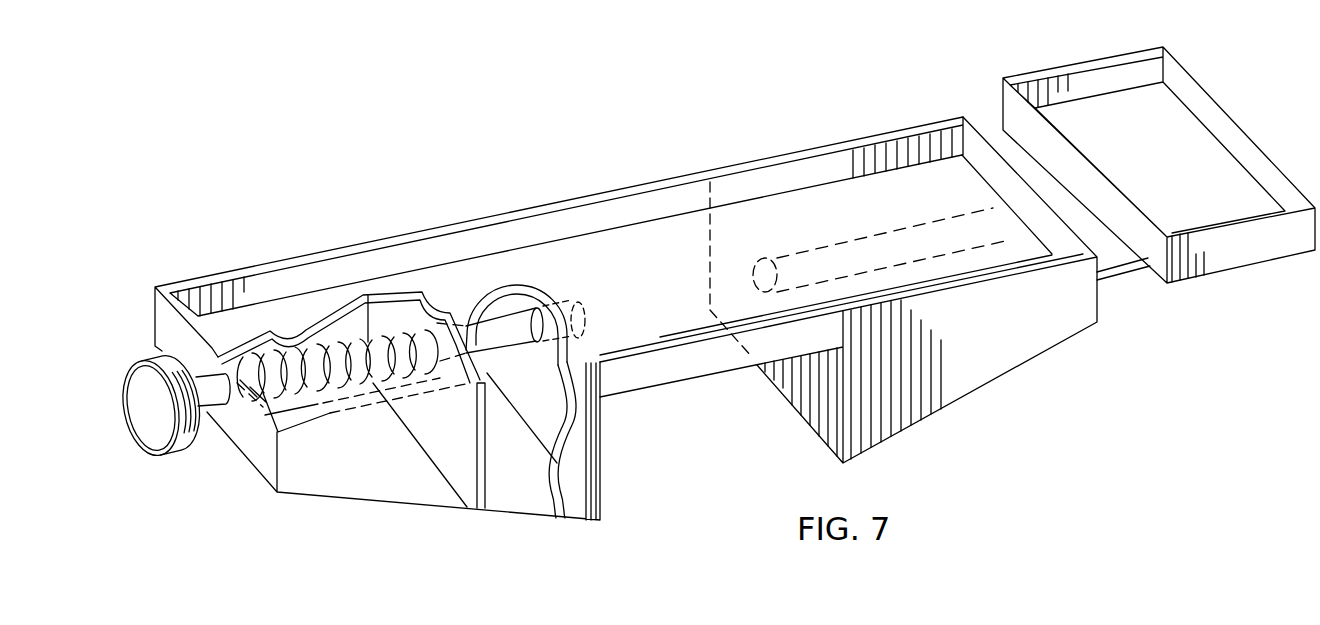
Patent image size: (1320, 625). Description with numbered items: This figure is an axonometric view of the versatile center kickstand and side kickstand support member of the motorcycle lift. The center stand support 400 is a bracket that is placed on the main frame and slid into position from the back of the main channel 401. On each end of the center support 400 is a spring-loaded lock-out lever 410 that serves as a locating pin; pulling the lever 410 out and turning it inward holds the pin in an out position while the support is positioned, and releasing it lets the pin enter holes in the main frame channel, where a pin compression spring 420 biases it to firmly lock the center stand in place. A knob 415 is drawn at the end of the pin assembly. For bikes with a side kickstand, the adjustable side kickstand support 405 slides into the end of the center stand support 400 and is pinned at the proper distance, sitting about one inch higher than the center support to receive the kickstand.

The center stand support 400 is at (610, 253).
The main channel 401 is at (689, 433).
The side kickstand support 405 is at (1162, 161).
The lock-out lever 410 is at (477, 323).
The adjustment knob 415 is at (177, 457).
The pin compression spring 420 is at (340, 393).